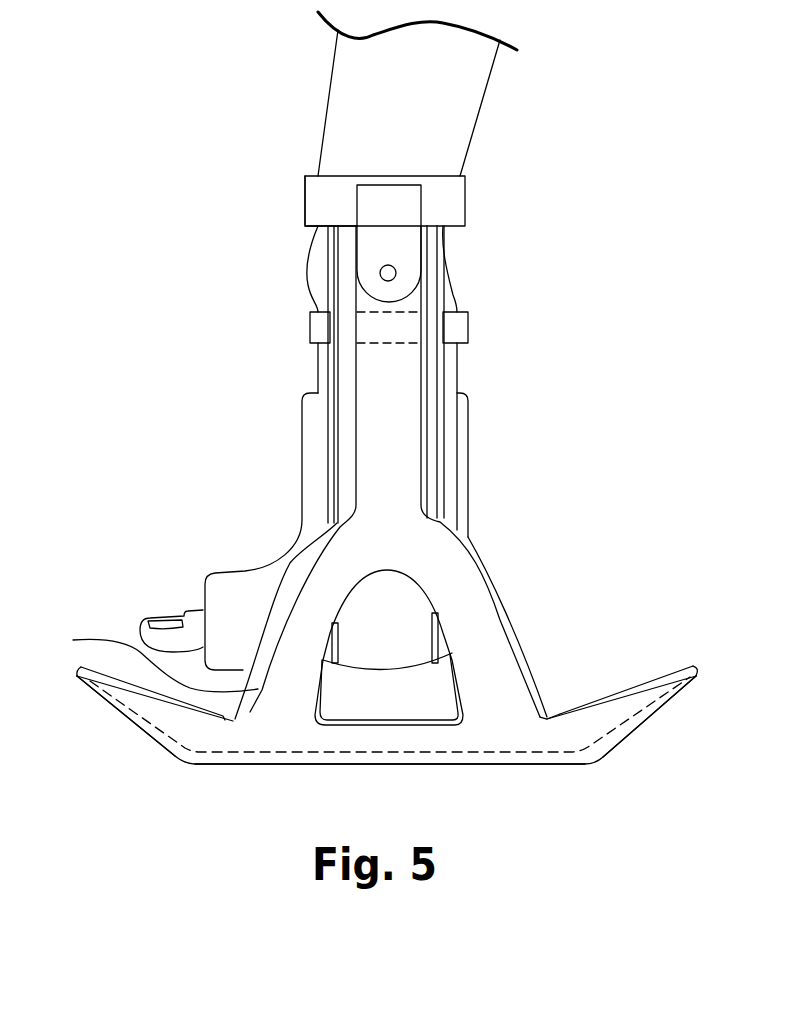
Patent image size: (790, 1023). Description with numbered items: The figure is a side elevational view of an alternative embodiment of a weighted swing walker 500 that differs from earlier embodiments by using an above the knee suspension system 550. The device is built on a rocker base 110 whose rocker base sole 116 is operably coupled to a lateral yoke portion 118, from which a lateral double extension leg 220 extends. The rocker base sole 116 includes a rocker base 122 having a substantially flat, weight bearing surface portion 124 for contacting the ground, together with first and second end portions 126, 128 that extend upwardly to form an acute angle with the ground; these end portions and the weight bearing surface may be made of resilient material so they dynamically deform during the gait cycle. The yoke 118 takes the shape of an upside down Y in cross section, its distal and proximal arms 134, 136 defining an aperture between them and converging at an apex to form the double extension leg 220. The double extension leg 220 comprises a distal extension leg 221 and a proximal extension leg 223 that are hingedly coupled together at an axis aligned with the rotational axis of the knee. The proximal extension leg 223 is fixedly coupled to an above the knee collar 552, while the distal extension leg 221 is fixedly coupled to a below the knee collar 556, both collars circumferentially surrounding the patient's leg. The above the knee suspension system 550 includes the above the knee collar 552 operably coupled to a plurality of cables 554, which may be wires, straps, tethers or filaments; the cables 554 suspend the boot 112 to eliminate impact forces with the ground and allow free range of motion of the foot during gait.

The rocker base 110 is at (368, 670).
The boot 112 is at (312, 458).
The rocker base sole 116 is at (513, 767).
The lateral yoke portion 118 is at (490, 592).
The rocker base 122 is at (430, 757).
The weight bearing surface portion 124 is at (300, 767).
The first end portion 126 is at (110, 712).
The second end portion 128 is at (657, 712).
The distal arm 134 is at (149, 660).
The proximal arm 136 is at (503, 620).
The lateral double extension leg 220 is at (420, 477).
The distal extension leg 221 is at (392, 433).
The proximal extension leg 223 is at (398, 200).
The weighted swing walker 500 is at (543, 382).
The above the knee suspension system 550 is at (465, 200).
The above the knee collar 552 is at (325, 200).
The cables 554 is at (437, 275).
The below the knee collar 556 is at (458, 328).